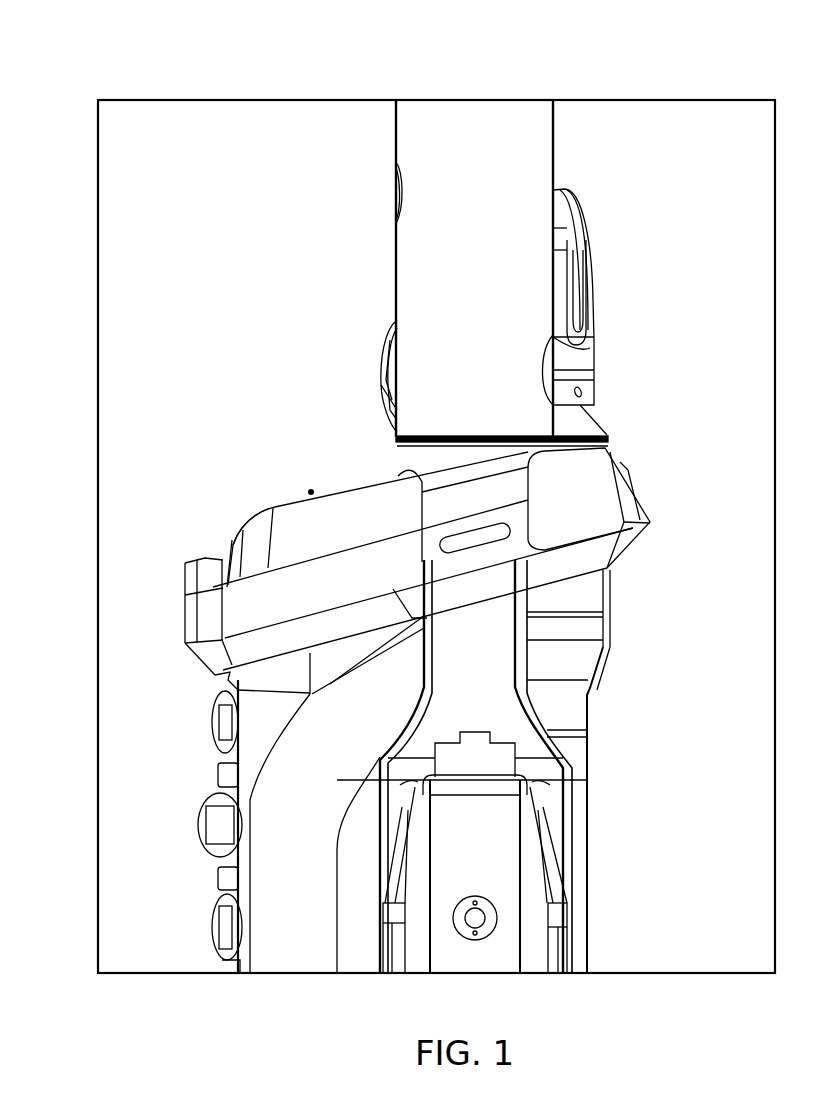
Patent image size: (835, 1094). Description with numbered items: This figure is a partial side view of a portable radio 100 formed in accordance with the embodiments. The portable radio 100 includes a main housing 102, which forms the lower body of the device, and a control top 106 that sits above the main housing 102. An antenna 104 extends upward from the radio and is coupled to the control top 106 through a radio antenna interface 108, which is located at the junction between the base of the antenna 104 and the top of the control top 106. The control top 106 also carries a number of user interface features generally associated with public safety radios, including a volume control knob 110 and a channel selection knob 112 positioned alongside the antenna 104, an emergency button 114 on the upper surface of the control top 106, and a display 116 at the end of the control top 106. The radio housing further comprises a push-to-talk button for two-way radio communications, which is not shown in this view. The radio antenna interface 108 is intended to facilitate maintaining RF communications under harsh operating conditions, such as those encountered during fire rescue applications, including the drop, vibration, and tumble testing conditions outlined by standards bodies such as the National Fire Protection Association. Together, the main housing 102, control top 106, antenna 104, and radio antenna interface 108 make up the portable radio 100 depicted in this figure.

The portable radio 100 is at (103, 48).
The main housing 102 is at (310, 755).
The antenna 104 is at (394, 243).
The control top 106 is at (254, 497).
The radio antenna interface 108 is at (410, 457).
The volume control knob 110 is at (380, 348).
The channel selection knob 112 is at (592, 290).
The emergency button 114 is at (310, 489).
The display 116 is at (228, 535).